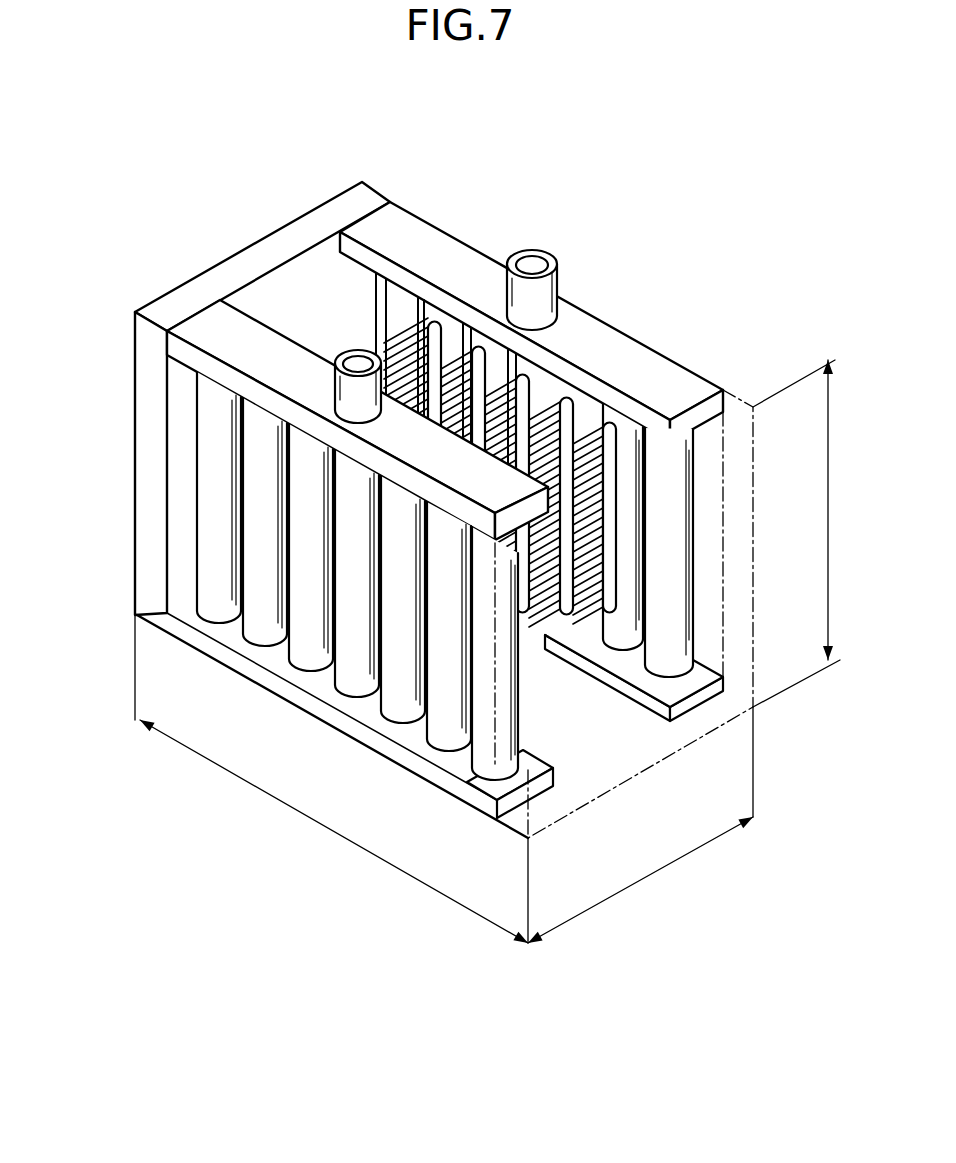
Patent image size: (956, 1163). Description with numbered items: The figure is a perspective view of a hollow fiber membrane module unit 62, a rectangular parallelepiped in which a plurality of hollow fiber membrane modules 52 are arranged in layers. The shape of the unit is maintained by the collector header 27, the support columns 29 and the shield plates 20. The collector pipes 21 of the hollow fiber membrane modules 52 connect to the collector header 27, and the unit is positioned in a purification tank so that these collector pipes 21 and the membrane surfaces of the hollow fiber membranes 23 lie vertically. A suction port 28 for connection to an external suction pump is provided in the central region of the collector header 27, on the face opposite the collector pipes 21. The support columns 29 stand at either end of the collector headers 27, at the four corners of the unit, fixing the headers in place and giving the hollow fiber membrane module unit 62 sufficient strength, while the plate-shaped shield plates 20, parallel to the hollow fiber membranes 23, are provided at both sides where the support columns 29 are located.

The hollow fiber membrane module unit 62 is at (282, 151).
The shield plate 20 is at (147, 537).
The collector pipe 21 is at (620, 410).
The hollow fiber membrane 23 is at (543, 410).
The collector header 27 is at (443, 227).
The suction port 28 is at (557, 280).
The support column 29 is at (487, 757).
The hollow fiber membrane module 52 is at (448, 725).